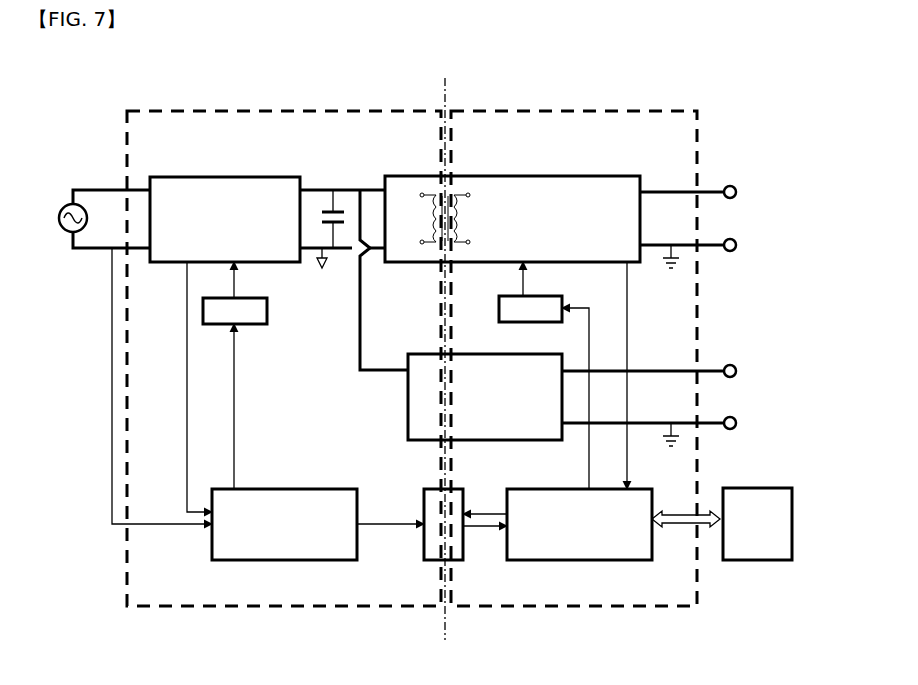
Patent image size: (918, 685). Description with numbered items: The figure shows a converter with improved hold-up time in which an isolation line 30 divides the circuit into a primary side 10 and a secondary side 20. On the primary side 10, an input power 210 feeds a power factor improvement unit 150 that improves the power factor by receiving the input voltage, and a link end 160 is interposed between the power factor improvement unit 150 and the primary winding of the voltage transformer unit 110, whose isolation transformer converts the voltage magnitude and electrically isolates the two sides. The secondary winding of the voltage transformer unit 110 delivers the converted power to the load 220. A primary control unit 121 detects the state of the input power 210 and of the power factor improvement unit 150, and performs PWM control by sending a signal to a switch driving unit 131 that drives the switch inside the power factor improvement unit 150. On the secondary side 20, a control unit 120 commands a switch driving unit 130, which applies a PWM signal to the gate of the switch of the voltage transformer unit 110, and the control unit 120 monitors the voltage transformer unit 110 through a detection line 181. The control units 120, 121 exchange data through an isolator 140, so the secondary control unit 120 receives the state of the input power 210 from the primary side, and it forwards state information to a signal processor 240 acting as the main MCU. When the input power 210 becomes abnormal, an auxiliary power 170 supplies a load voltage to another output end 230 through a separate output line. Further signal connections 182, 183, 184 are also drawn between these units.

The primary side 10 is at (293, 106).
The secondary side 20 is at (572, 108).
The isolation line 30 is at (447, 84).
The voltage transformer unit 110 is at (512, 172).
The control unit 120 is at (578, 560).
The primary control unit 121 is at (276, 560).
The switch driving unit 130 is at (563, 305).
The switch driving unit 131 is at (268, 312).
The isolator 140 is at (424, 498).
The power factor improvement unit 150 is at (228, 172).
The link end 160 is at (334, 188).
The auxiliary power 170 is at (408, 412).
The detection line 181 is at (628, 308).
The control signal line 182 is at (590, 366).
The feedback line 183 is at (188, 430).
The control line 184 is at (236, 372).
The input power 210 is at (62, 200).
The load 220 is at (735, 186).
The another output end 230 is at (735, 364).
The signal processor 240 is at (758, 486).